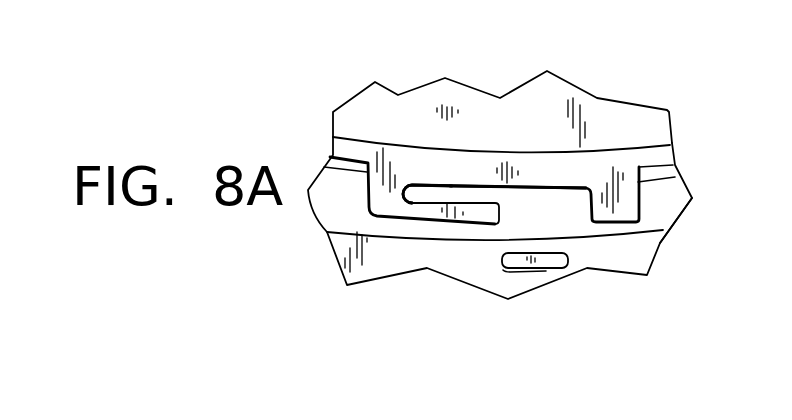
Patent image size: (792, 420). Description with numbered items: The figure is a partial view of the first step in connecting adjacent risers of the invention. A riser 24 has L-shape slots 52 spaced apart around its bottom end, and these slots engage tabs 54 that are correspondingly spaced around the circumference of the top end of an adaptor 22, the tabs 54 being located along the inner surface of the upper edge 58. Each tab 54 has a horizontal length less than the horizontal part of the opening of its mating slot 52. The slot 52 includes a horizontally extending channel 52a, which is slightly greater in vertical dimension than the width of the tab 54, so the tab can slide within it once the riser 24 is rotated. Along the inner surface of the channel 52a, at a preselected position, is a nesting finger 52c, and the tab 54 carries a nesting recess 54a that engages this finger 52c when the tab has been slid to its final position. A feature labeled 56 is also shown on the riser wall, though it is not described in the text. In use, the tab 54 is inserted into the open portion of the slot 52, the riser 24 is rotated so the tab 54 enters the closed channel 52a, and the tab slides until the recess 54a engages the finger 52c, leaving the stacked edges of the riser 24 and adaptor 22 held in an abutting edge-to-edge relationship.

The adaptor 22 is at (395, 263).
The riser 24 is at (549, 135).
The L-shape slot 52 is at (557, 199).
The horizontally extending channel 52a is at (472, 188).
The nesting finger 52c is at (426, 185).
The tab 54 is at (543, 262).
The nesting recess 54a is at (511, 271).
The flange 56 is at (657, 157).
The upper edge 58 is at (665, 202).